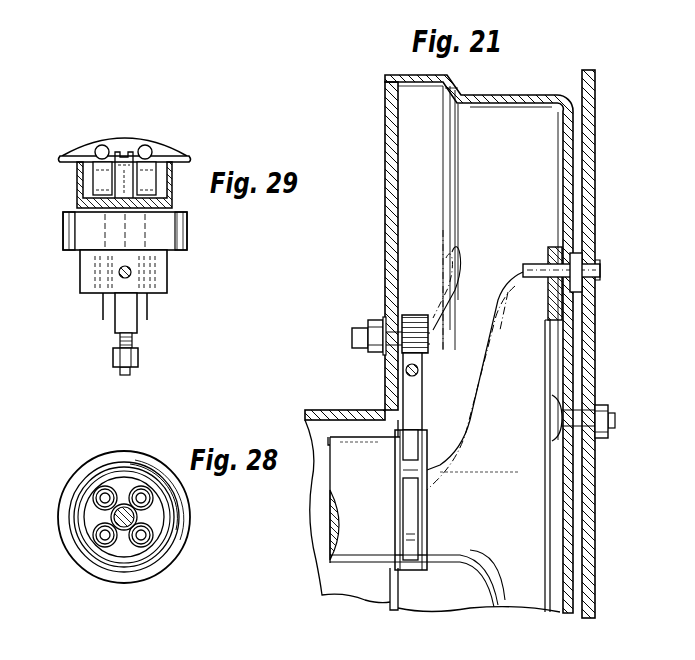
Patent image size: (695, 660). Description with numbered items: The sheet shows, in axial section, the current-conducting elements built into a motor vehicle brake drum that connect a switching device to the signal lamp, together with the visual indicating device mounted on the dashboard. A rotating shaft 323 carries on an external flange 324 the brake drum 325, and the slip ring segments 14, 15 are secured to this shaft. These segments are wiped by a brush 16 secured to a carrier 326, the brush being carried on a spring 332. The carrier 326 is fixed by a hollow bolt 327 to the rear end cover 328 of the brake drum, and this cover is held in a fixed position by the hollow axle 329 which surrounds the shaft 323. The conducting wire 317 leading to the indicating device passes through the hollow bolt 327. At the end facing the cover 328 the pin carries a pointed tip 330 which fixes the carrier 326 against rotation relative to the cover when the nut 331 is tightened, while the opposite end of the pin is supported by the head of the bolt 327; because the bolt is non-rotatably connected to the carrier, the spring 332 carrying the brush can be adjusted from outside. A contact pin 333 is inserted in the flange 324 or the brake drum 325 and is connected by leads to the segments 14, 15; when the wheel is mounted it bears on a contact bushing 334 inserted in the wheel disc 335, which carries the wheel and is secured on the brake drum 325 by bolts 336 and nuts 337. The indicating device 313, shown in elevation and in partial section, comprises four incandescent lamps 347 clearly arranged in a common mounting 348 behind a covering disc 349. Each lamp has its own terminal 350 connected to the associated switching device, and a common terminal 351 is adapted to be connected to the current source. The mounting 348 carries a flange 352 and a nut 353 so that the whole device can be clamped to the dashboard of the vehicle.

In FIG. 21, the slip ring segment 14 is at (413, 562).
In FIG. 21, the slip ring segment 15 is at (408, 470).
In FIG. 21, the brush 16 is at (410, 453).
In FIG. 29, the indicating device 313 is at (195, 253).
In FIG. 28, the indicating device 313 is at (63, 468).
In FIG. 21, the conducting wire 317 is at (352, 338).
In FIG. 21, the rotating shaft 323 is at (355, 537).
In FIG. 21, the external flange 324 is at (547, 246).
In FIG. 21, the brake drum 325 is at (540, 97).
In FIG. 21, the carrier 326 is at (420, 353).
In FIG. 21, the hollow bolt 327 is at (366, 320).
In FIG. 21, the rear end cover 328 is at (389, 108).
In FIG. 21, the hollow axle 329 is at (325, 414).
In FIG. 21, the pointed tip 330 is at (402, 310).
In FIG. 21, the nut 331 is at (377, 356).
In FIG. 21, the spring 332 is at (418, 423).
In FIG. 21, the contact pin 333 is at (533, 264).
In FIG. 21, the contact bushing 334 is at (584, 289).
In FIG. 21, the wheel disc 335 is at (594, 116).
In FIG. 21, the bolt 336 is at (612, 417).
In FIG. 21, the nut 337 is at (598, 407).
In FIG. 29, the incandescent lamp 347 is at (145, 146).
In FIG. 28, the incandescent lamp 347 is at (141, 492).
In FIG. 29, the common mounting 348 is at (78, 184).
In FIG. 29, the covering disc 349 is at (90, 142).
In FIG. 29, the terminal 350 is at (103, 306).
In FIG. 29, the common terminal 351 is at (130, 371).
In FIG. 29, the flange 352 is at (65, 156).
In FIG. 29, the nut 353 is at (70, 221).